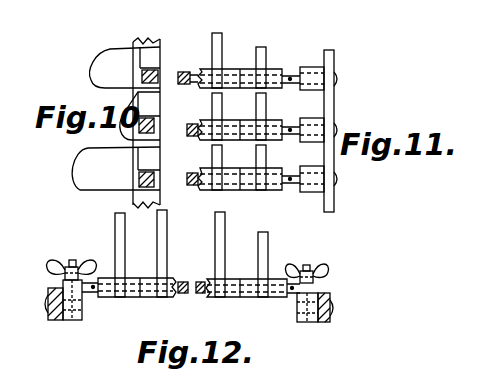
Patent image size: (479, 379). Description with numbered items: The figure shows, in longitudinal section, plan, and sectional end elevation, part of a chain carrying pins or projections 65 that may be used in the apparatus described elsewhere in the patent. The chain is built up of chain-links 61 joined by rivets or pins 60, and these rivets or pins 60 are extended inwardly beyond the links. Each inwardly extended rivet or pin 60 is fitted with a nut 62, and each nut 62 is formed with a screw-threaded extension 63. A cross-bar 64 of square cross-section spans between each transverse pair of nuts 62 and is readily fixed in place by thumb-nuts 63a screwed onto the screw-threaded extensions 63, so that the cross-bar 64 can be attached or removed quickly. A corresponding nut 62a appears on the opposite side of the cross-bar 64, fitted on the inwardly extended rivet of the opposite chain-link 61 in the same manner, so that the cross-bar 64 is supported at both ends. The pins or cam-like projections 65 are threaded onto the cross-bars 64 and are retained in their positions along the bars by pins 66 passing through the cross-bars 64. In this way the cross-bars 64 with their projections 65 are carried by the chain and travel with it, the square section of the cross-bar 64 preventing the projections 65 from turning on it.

In FIG. 11, the rivet or pin 60 is at (337, 78).
In FIG. 12, the rivet or pin 60 is at (337, 311).
In FIG. 11, the chain-link 61 is at (327, 106).
In FIG. 12, the chain-link 61 is at (49, 318).
In FIG. 11, the nut 62 is at (308, 192).
In FIG. 12, the nut 62 is at (74, 321).
In FIG. 12, the nut block 62a is at (308, 277).
In FIG. 12, the screw-threaded extension 63 is at (74, 259).
In FIG. 12, the thumb-nut 63a is at (340, 258).
In FIG. 11, the cross-bar 64 is at (179, 71).
In FIG. 12, the cross-bar 64 is at (183, 282).
In FIG. 10, the pin or cam-like projection 65 is at (118, 62).
In FIG. 12, the pin or cam-like projection 65 is at (221, 233).
In FIG. 12, the pin 66 is at (94, 289).